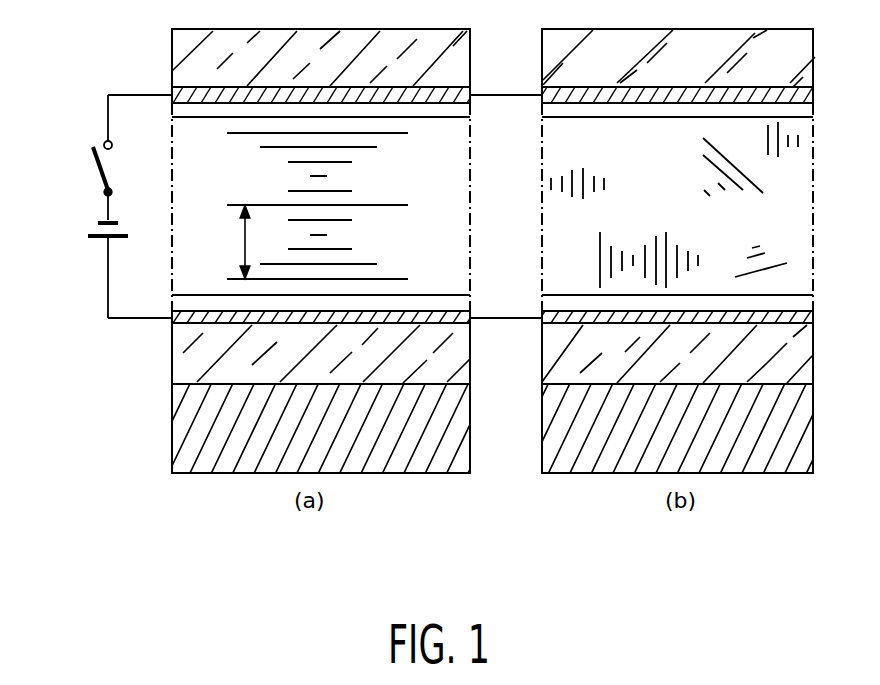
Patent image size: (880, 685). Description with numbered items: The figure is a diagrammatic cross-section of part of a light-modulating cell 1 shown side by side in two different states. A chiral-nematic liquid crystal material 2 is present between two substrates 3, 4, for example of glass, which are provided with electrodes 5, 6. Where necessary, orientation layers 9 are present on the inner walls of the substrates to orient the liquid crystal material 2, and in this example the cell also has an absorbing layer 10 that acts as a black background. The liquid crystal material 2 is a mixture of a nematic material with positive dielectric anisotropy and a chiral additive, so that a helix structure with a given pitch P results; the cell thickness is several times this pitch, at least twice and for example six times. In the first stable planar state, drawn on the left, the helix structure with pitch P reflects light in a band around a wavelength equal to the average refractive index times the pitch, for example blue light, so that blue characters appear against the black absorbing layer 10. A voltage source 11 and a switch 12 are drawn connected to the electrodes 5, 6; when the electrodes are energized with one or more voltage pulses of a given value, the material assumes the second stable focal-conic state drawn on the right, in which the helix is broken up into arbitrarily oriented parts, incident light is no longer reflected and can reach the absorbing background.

The light-modulating cell 1 is at (141, 469).
The chiral-nematic liquid crystal material 2 is at (562, 213).
The substrate 3 is at (556, 356).
The substrate 4 is at (542, 60).
The electrode 5 is at (575, 321).
The electrode 6 is at (550, 95).
The orientation layer 9 is at (565, 118).
The absorbing layer 10 is at (556, 458).
The voltage source 11 is at (98, 228).
The switch 12 is at (93, 145).